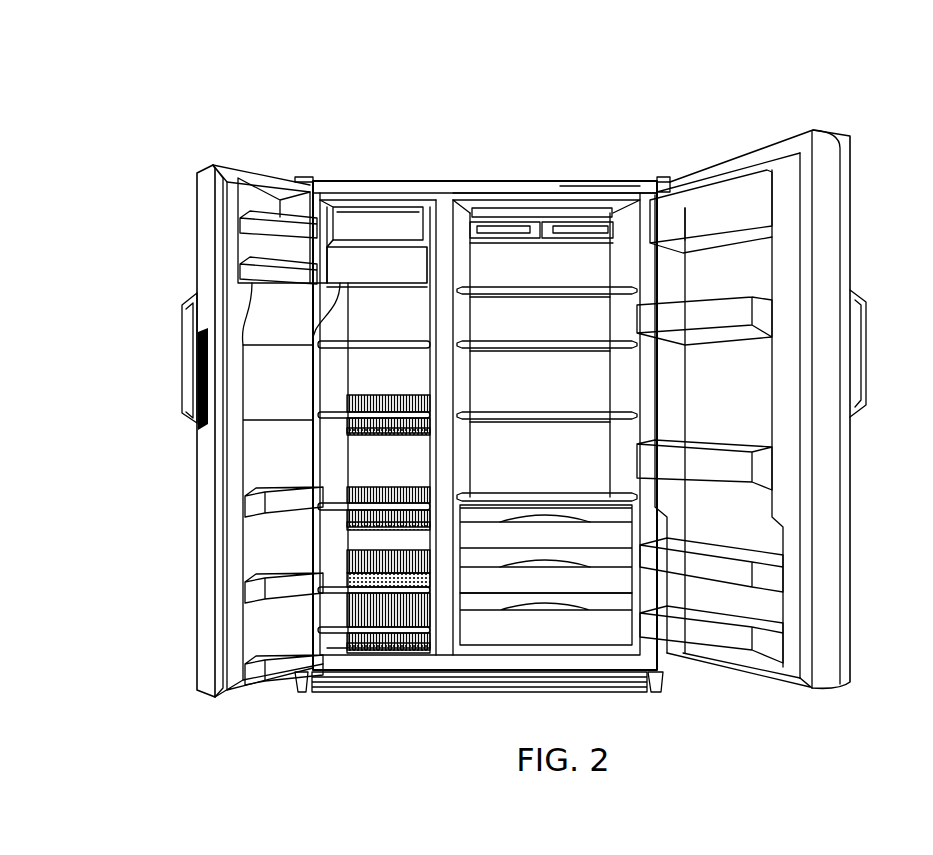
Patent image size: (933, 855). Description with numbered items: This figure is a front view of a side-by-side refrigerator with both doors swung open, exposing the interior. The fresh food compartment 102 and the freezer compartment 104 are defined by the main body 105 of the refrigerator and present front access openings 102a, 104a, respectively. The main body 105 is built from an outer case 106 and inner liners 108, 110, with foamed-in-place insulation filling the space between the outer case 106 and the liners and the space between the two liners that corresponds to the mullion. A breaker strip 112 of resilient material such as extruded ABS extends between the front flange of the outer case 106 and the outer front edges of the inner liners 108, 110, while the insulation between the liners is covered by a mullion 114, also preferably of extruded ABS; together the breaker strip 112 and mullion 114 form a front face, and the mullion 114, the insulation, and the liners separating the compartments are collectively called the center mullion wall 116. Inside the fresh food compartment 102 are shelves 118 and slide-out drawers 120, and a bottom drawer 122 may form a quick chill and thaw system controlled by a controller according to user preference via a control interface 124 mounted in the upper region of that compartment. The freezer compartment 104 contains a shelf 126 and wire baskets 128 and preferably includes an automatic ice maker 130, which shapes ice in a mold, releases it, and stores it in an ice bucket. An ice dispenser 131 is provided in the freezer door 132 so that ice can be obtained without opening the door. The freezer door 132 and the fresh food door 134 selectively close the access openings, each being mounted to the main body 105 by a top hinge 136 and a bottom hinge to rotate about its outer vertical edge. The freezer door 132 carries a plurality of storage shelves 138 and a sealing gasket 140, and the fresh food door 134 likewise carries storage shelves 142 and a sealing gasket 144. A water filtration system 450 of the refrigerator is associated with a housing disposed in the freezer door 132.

The fresh food compartment 102 is at (627, 198).
The front access opening 102a is at (642, 90).
The freezer compartment 104 is at (400, 200).
The front access opening 104a is at (396, 120).
The main body 105 is at (425, 160).
The outer case 106 is at (511, 163).
The inner liner 108 is at (553, 207).
The inner liner 110 is at (353, 208).
The breaker strip 112 is at (583, 185).
The mullion 114 is at (438, 420).
The center mullion wall 116 is at (468, 368).
The shelves 118 is at (537, 288).
The slide-out drawers 120 is at (518, 542).
The bottom drawer 122 is at (518, 634).
The control interface 124 is at (484, 200).
The shelf 126 is at (372, 350).
The wire baskets 128 is at (316, 418).
The automatic ice maker 130 is at (372, 280).
The ice dispenser 131 is at (244, 312).
The freezer door 132 is at (190, 168).
The fresh food door 134 is at (862, 180).
The top hinge 136 is at (302, 177).
The storage shelves 138 is at (257, 670).
The sealing gasket 140 is at (236, 175).
The storage shelves 142 is at (693, 338).
The sealing gasket 144 is at (753, 175).
The water filtration system 450 is at (160, 455).